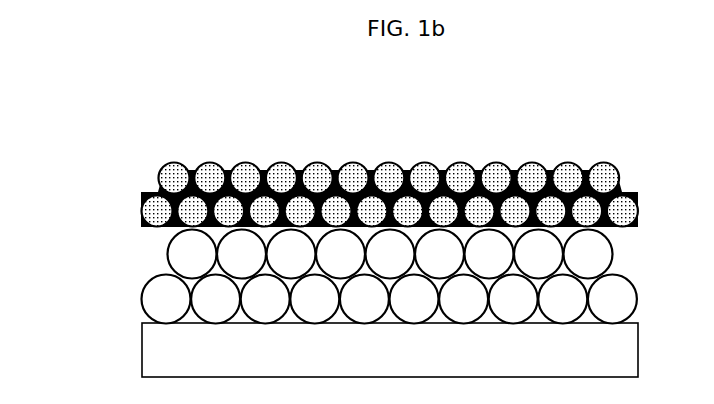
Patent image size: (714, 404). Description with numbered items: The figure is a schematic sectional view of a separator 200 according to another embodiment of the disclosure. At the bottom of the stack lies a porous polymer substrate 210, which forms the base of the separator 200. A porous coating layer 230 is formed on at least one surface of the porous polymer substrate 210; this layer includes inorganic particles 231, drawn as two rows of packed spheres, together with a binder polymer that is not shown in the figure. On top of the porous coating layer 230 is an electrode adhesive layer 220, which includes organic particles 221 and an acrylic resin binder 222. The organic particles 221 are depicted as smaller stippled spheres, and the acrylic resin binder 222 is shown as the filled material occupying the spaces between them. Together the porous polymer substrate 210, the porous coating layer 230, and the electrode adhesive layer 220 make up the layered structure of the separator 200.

The separator 200 is at (619, 129).
The porous polymer substrate 210 is at (627, 351).
The electrode adhesive layer 220 is at (647, 167).
The organic particles 221 is at (439, 173).
The acrylic resin binder 222 is at (551, 172).
The porous coating layer 230 is at (647, 232).
The inorganic particles 231 is at (158, 288).